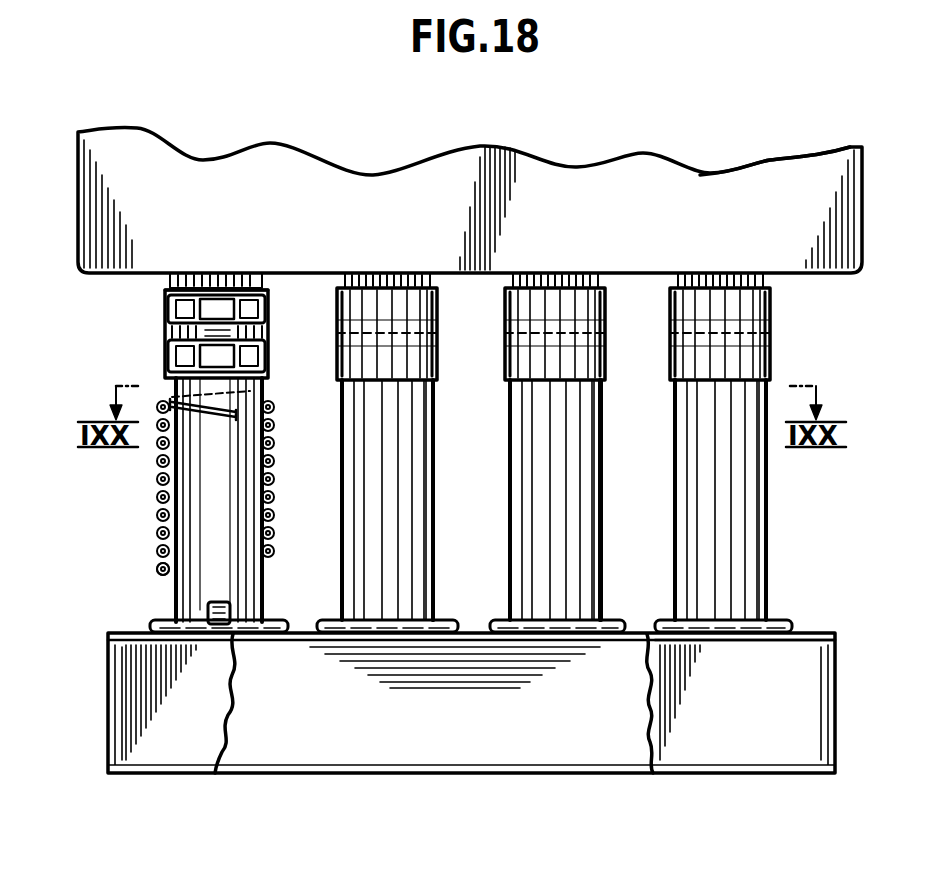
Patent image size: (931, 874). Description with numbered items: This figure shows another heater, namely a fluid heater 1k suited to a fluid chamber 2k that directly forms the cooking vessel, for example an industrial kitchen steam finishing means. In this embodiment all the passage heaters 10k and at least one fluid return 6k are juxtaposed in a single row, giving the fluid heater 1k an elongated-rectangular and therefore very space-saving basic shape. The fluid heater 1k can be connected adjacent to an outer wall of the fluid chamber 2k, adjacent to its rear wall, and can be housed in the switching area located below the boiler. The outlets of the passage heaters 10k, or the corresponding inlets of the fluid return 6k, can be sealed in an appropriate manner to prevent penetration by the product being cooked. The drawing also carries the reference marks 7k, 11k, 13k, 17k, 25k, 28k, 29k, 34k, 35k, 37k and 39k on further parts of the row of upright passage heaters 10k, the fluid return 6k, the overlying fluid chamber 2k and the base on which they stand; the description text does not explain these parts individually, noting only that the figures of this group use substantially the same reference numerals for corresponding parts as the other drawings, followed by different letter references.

The fluid heater 1k is at (413, 122).
The fluid chamber 2k is at (772, 158).
The fluid return 6k is at (447, 440).
The column wall 7k is at (433, 505).
The passage heaters 10k is at (159, 561).
The column guide 11k is at (247, 453).
The roller chain 13k is at (274, 481).
The clamp assembly 17k is at (157, 333).
The cross bar 25k is at (264, 396).
The clamp top 28k is at (243, 273).
The base plate 29k is at (713, 627).
The base 34k is at (801, 648).
The roller set 35k is at (126, 500).
The base top surface 37k is at (733, 640).
The fastener 39k is at (222, 602).